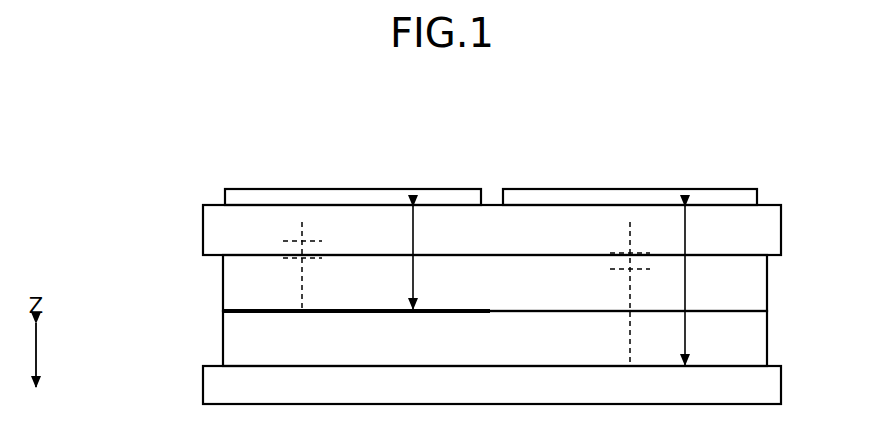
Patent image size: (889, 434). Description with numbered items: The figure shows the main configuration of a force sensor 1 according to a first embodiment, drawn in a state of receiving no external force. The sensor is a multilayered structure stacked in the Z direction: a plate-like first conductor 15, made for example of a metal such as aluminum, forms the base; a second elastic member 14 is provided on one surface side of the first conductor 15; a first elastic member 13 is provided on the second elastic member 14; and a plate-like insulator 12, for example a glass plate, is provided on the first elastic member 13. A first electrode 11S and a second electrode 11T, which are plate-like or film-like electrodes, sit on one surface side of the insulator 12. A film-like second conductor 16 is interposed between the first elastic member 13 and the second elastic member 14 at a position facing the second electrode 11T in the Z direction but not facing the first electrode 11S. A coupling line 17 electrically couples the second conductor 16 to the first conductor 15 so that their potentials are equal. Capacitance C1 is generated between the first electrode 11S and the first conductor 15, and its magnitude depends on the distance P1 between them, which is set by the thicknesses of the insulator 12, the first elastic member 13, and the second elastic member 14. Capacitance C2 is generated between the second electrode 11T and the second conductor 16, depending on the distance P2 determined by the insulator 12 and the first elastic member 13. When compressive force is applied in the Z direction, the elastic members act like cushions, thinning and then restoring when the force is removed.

The force sensor 1 is at (185, 153).
The second electrode 11T is at (448, 188).
The first electrode 11S is at (726, 188).
The insulator 12 is at (768, 230).
The first elastic member 13 is at (760, 283).
The second elastic member 14 is at (760, 339).
The first conductor 15 is at (768, 384).
The second conductor 16 is at (237, 309).
The coupling line 17 is at (221, 318).
The capacitance C1 is at (630, 222).
The capacitance C2 is at (302, 222).
The distance P1 is at (701, 285).
The distance P2 is at (429, 257).